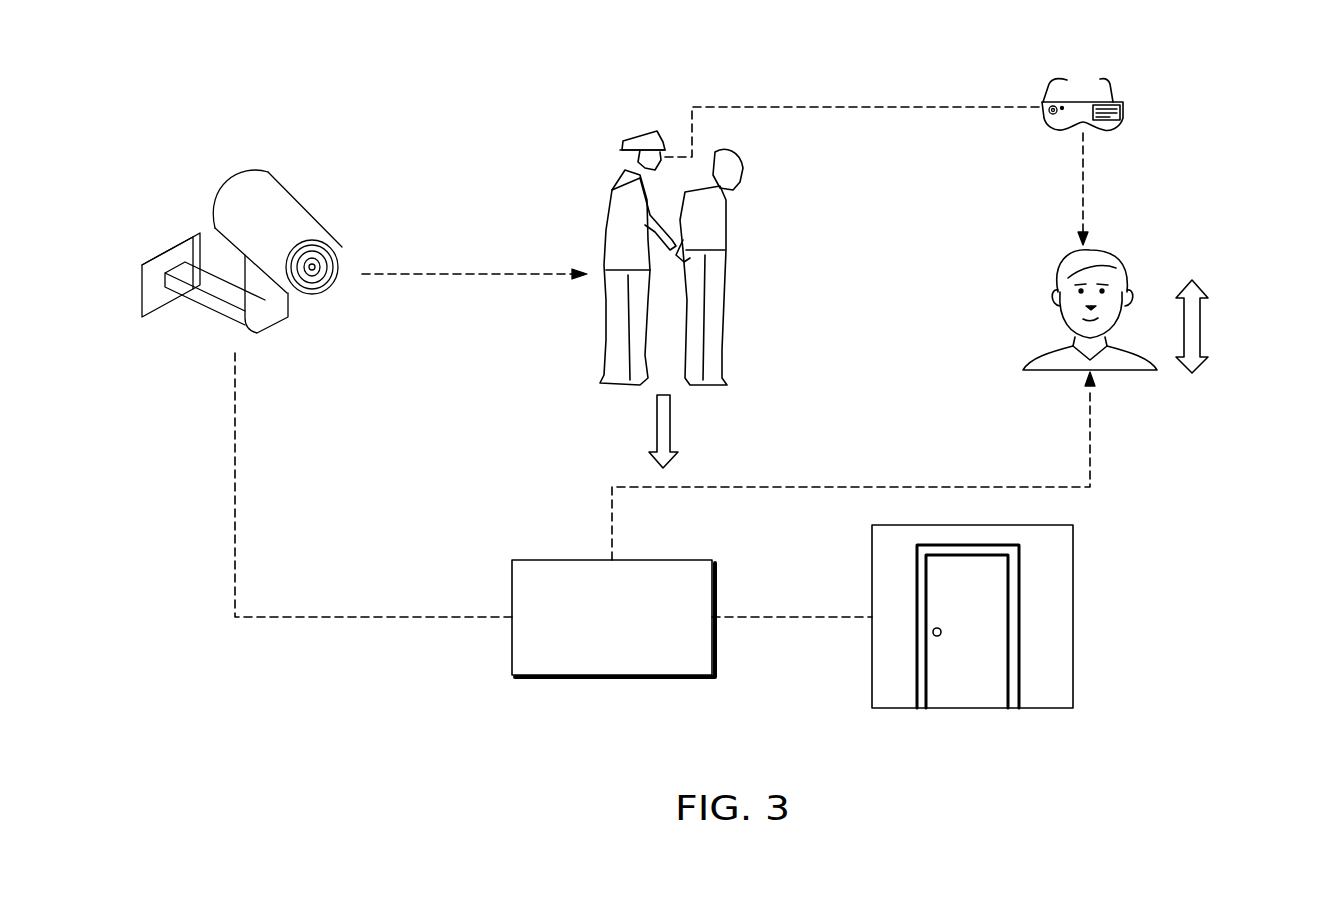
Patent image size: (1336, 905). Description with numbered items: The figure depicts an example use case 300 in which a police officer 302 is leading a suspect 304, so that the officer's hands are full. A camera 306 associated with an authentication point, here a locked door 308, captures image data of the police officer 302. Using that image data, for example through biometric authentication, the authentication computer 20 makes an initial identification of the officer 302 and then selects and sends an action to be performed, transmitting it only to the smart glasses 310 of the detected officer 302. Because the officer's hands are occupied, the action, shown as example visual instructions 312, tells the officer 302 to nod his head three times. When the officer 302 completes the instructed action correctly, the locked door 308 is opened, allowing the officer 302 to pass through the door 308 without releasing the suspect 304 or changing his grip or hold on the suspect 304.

The authentication computer 20 is at (612, 678).
The example use case 300 is at (1129, 86).
The police officer 302 is at (596, 140).
The suspect 304 is at (772, 164).
The camera 306 is at (174, 164).
The locked door 308 is at (1048, 731).
The smart glasses 310 is at (1122, 122).
The visual instructions 312 is at (1230, 376).